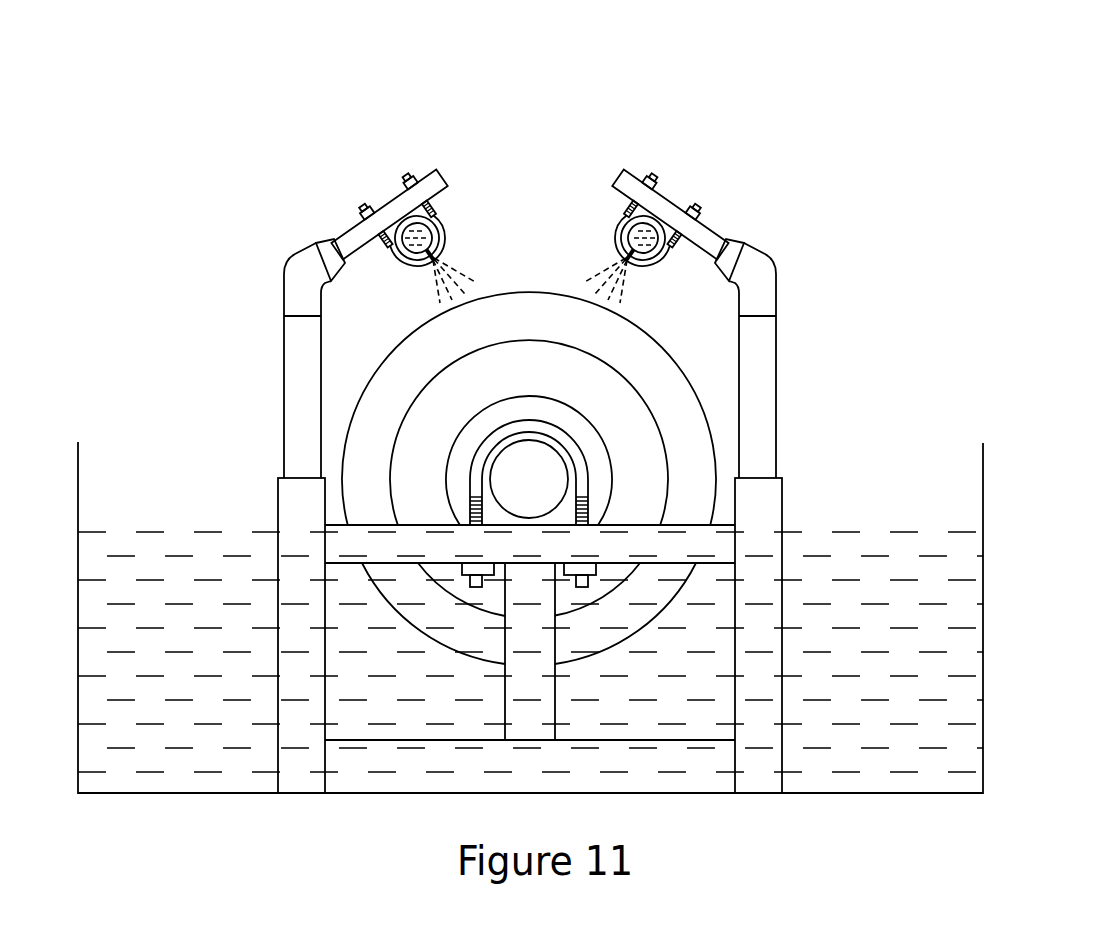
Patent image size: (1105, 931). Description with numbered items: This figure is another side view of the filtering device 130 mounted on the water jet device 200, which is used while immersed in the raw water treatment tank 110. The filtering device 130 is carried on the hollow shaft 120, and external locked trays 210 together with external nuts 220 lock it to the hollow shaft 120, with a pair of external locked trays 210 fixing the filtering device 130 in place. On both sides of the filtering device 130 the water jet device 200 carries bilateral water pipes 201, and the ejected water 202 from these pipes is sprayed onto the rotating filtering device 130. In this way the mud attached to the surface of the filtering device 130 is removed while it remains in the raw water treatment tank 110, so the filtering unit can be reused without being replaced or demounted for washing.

The raw water treatment tank 110 is at (1001, 485).
The hollow shaft 120 is at (462, 472).
The filtering device 130 is at (629, 473).
The water jet device 200 is at (262, 369).
The bilateral water pipes 201 is at (405, 222).
The ejected water 202 is at (461, 277).
The external locked tray 210 is at (625, 417).
The external nut 220 is at (603, 476).